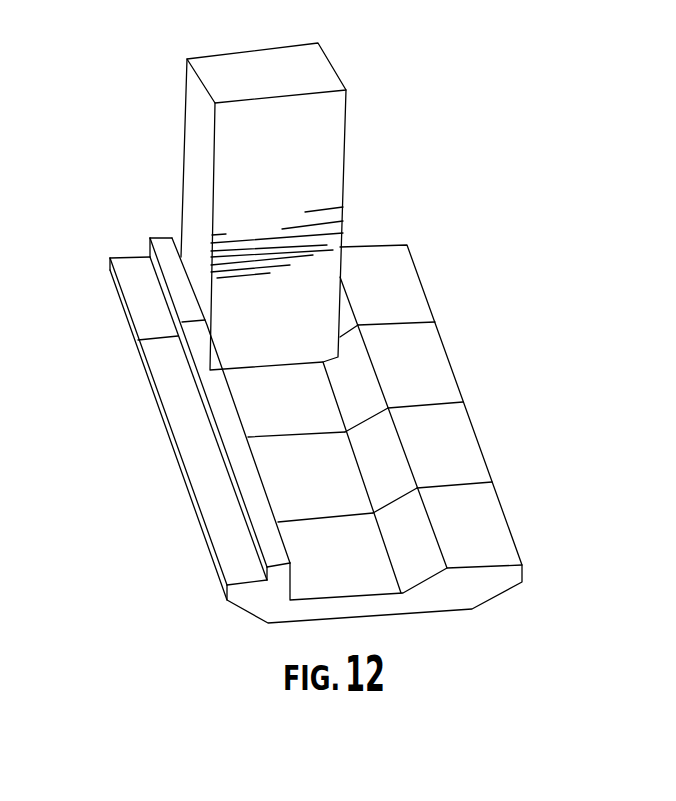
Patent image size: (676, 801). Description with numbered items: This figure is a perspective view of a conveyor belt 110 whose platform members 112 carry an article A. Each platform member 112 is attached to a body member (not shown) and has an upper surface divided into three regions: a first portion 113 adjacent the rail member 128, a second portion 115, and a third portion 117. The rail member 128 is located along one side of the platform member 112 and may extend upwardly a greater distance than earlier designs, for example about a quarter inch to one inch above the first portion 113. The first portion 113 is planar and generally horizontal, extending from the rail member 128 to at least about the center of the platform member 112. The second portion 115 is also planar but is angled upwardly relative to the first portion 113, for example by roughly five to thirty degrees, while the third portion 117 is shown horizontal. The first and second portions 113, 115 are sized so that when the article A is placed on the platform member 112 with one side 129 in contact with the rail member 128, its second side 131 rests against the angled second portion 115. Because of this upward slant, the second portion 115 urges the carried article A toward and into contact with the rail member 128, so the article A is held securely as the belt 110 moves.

The article A is at (326, 134).
The belt 110 is at (286, 394).
The platform member 112 is at (447, 349).
The first portion 113 is at (266, 398).
The second portion 115 is at (358, 377).
The third portion 117 is at (430, 366).
The rail member 128 is at (180, 343).
The side of article 129 is at (200, 208).
The second side of article 131 is at (346, 193).